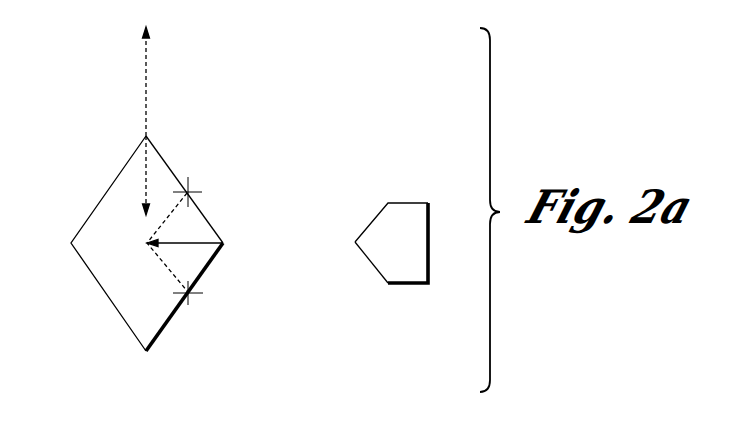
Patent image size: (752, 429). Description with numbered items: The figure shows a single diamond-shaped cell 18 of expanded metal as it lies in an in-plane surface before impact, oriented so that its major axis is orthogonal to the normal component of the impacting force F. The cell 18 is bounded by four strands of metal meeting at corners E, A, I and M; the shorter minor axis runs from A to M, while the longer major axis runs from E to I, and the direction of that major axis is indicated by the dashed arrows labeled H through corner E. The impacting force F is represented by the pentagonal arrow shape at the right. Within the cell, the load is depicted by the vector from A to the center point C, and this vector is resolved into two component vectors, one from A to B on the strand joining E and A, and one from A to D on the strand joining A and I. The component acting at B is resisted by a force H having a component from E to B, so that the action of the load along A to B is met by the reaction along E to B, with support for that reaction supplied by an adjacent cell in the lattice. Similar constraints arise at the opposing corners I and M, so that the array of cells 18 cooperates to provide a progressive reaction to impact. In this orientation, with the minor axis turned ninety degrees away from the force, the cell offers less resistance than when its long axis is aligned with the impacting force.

The expanded metal cell 18 is at (145, 203).
The reaction force H is at (137, 121).
The top corner of cell E is at (174, 180).
The left corner of cell M is at (97, 243).
The bottom corner of cell I is at (184, 311).
The loaded corner of cell A is at (199, 244).
The point on strand EA B is at (191, 187).
The cell center point C is at (156, 242).
The point on strand AI D is at (191, 302).
The impacting force F is at (404, 243).